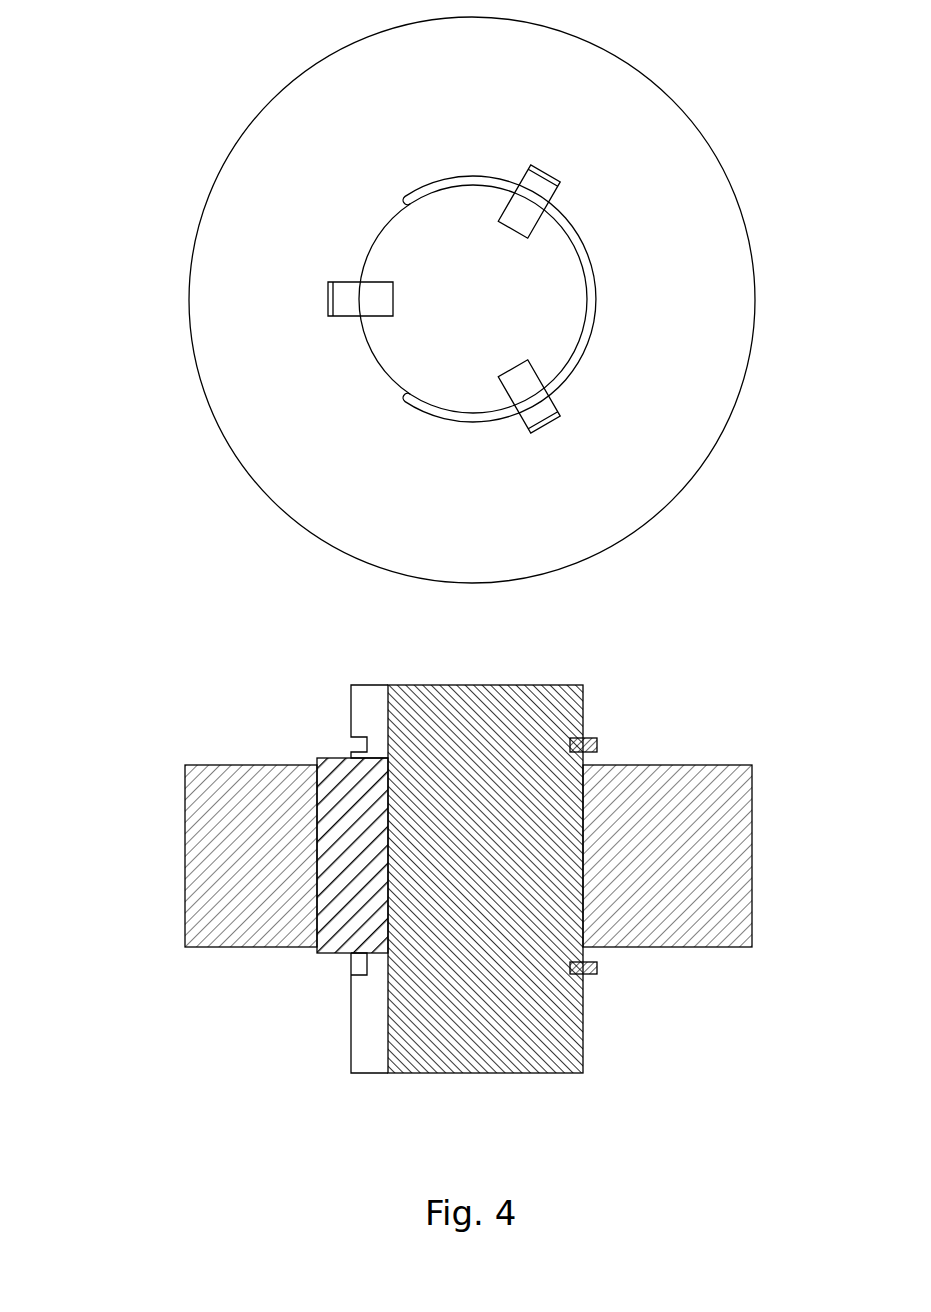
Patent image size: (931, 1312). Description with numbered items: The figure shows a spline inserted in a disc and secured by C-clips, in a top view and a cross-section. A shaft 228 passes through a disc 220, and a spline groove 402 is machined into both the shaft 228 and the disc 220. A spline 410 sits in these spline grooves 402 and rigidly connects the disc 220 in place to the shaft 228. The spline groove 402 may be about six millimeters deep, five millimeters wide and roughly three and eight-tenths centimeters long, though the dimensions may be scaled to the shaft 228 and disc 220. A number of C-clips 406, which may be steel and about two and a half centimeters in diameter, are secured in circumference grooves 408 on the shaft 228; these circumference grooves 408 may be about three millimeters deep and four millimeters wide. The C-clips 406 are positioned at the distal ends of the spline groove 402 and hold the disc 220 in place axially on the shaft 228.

The disc 220 is at (328, 100).
The shaft 228 is at (405, 236).
The spline groove 402 is at (378, 718).
The C-clip 406 is at (533, 395).
The circumference groove 408 is at (353, 968).
The spline 410 is at (350, 300).